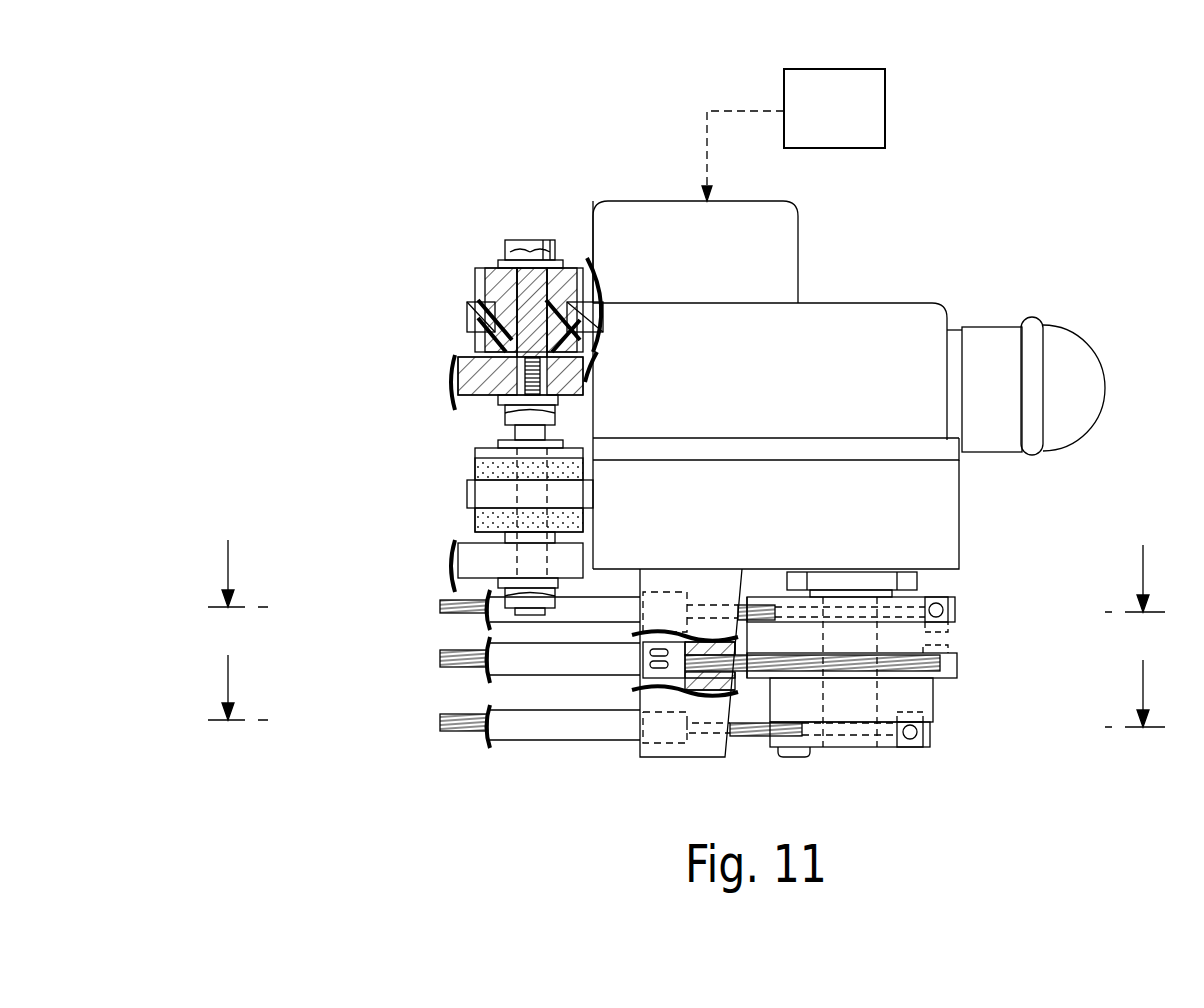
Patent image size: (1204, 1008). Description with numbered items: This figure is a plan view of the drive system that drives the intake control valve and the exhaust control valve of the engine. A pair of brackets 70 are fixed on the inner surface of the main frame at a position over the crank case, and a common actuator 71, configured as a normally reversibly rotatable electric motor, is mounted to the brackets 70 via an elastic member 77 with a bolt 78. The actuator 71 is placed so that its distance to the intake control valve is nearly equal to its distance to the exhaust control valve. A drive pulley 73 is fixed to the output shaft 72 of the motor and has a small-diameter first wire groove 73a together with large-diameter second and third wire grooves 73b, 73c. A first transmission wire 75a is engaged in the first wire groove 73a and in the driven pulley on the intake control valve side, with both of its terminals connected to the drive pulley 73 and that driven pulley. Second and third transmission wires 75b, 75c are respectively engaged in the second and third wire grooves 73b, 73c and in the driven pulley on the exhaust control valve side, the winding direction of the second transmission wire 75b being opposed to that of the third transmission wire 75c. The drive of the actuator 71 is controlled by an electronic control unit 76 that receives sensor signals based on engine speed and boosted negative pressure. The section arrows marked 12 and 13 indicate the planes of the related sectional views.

The brackets 70 is at (452, 382).
The actuator 71 is at (853, 341).
The output shaft 72 is at (845, 635).
The drive pulley 73 is at (915, 700).
The first wire groove 73a is at (935, 738).
The second wire groove 73b is at (957, 668).
The third wire groove 73c is at (957, 608).
The first transmission wire 75a is at (438, 722).
The second transmission wire 75b is at (438, 660).
The third transmission wire 75c is at (438, 605).
The electronic control unit 76 is at (852, 110).
The elastic member 77 is at (482, 292).
The bolt 78 is at (530, 245).
The section line for Fig. 12 is at (686, 685).
The section line for Fig. 13 is at (686, 567).